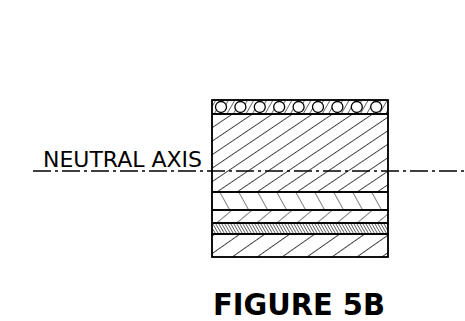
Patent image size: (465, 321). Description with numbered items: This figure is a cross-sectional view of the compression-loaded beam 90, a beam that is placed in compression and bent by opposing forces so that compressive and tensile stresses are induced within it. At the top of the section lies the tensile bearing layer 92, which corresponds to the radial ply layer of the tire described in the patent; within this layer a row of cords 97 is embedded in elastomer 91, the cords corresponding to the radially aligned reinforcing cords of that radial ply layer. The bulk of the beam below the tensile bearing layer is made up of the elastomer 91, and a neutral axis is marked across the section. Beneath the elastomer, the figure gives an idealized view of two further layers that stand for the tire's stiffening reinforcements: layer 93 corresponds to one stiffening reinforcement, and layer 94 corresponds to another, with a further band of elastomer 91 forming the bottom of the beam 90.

The compression-loaded beam 90 is at (377, 71).
The elastomer 91 is at (243, 134).
The tensile bearing layer 92 is at (212, 111).
The stiffening reinforcement layer 93 is at (218, 202).
The stiffening reinforcement layer 94 is at (218, 229).
The cords 97 is at (277, 100).